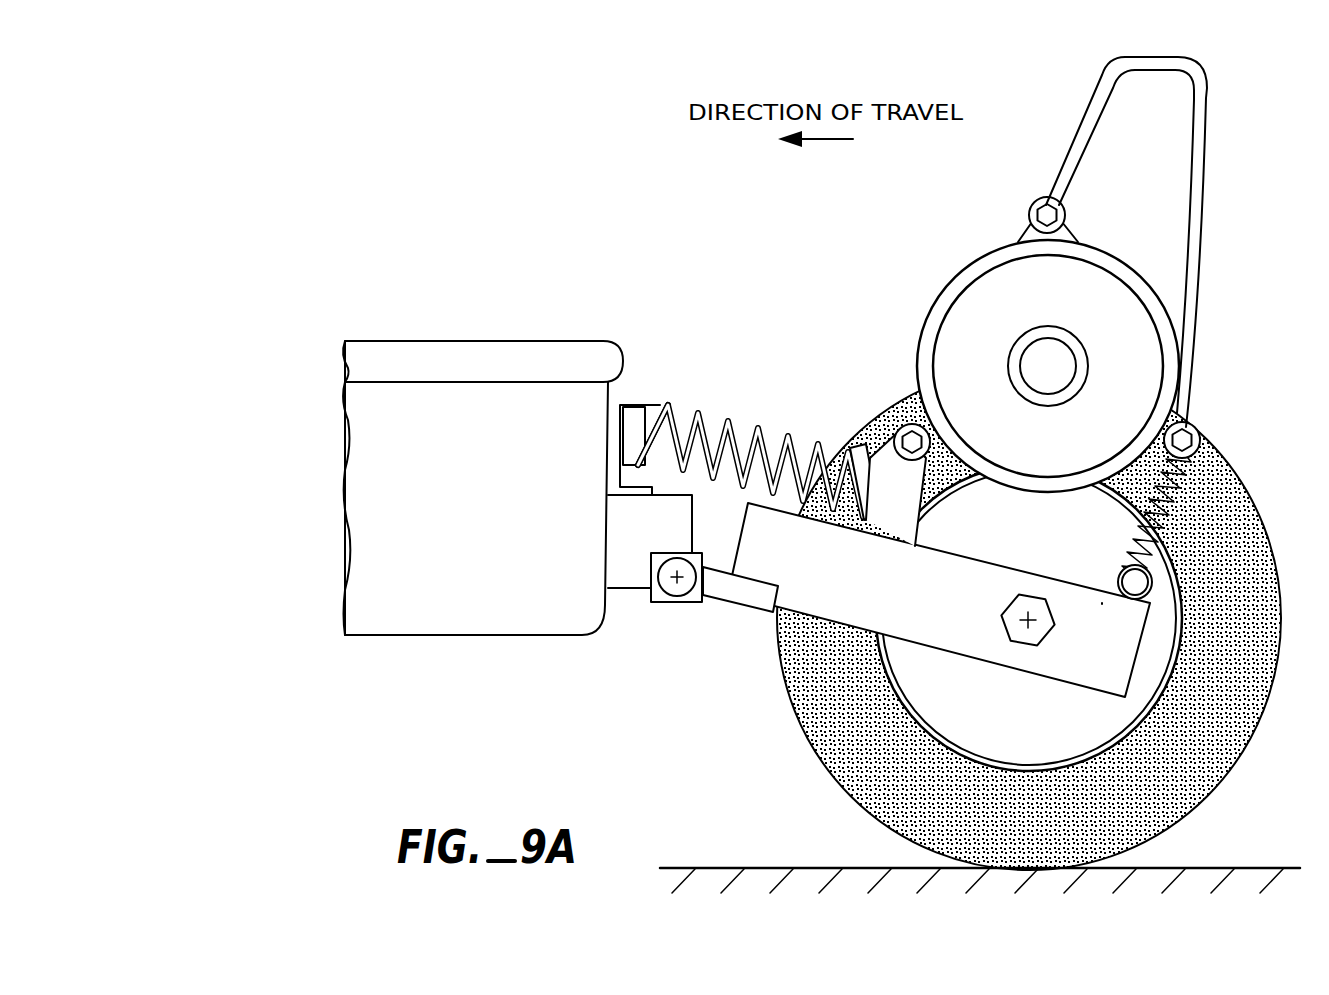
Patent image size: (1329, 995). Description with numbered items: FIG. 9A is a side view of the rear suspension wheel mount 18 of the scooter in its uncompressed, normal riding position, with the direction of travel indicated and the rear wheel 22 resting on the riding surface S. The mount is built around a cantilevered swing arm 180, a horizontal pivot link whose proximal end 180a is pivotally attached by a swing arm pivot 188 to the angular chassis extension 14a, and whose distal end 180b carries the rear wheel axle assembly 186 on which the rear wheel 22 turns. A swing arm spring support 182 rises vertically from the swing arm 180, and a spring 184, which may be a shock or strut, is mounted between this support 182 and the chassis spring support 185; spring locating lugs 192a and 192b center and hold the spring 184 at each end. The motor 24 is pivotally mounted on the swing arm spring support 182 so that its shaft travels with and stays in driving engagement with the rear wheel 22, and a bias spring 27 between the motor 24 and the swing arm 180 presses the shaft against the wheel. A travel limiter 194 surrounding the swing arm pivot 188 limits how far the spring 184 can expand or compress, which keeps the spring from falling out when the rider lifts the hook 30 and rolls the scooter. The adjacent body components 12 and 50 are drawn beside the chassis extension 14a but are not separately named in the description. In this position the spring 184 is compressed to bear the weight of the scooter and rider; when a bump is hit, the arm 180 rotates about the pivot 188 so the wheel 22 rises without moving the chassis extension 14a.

The housing cover 12 is at (500, 340).
The housing 50 is at (531, 497).
The angular chassis extension 14a is at (632, 577).
The rear suspension wheel mount 18 is at (805, 400).
The rear wheel 22 is at (1253, 583).
The motor 24 is at (975, 305).
The bias spring 27 is at (1190, 505).
The hook 30 is at (1198, 223).
The cantilevered swing arm 180 is at (950, 604).
The proximal end 180a is at (763, 607).
The distal end 180b is at (1102, 605).
The swing arm spring support 182 is at (912, 498).
The spring 184 is at (727, 420).
The chassis spring support 185 is at (622, 408).
The rear wheel axle assembly 186 is at (1016, 634).
The swing arm pivot 188 is at (667, 603).
The spring locating lug 192a is at (650, 408).
The spring locating lug 192b is at (888, 428).
The travel limiter 194 is at (683, 603).
The riding surface S is at (1240, 867).